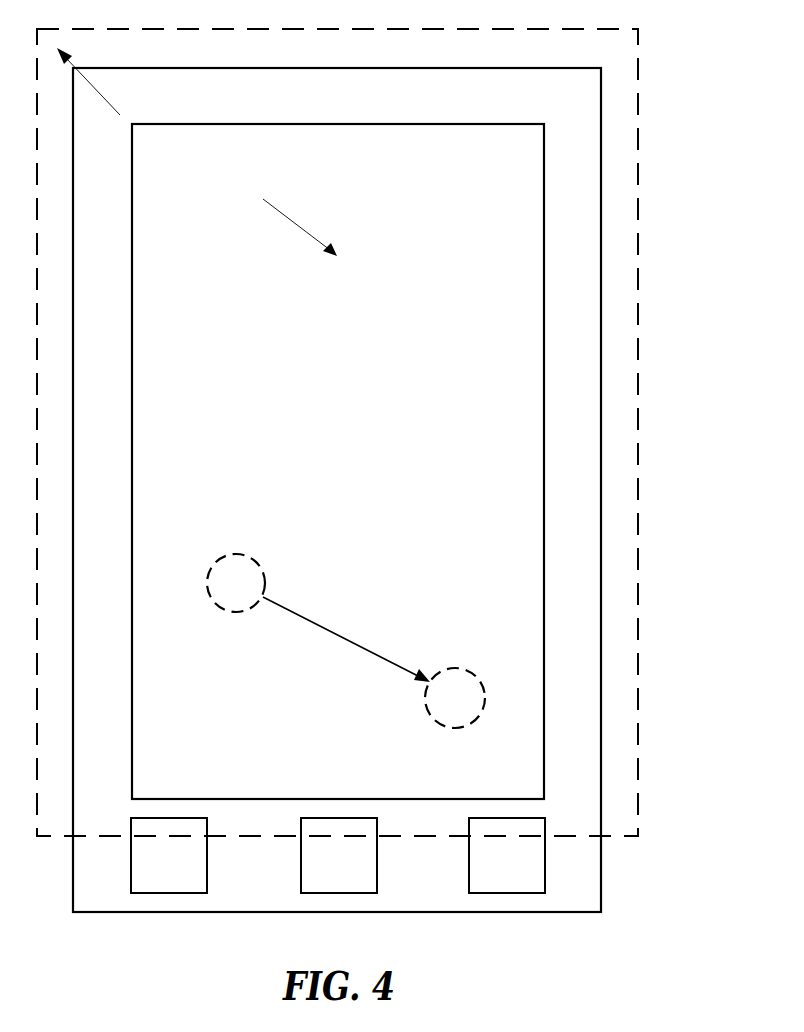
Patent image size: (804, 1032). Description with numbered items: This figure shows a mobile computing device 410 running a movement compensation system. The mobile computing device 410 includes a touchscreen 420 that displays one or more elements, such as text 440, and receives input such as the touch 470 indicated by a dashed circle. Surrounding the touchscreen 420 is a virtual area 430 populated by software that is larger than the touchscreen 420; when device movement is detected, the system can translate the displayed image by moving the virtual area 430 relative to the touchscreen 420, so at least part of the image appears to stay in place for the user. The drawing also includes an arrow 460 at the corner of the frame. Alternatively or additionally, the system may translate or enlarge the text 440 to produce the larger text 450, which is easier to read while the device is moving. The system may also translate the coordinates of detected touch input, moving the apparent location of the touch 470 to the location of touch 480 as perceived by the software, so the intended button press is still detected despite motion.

The mobile computing device 410 is at (601, 88).
The touchscreen 420 is at (544, 166).
The virtual area 430 is at (638, 50).
The text 440 is at (349, 185).
The larger text 450 is at (507, 276).
The corner drag arrow 460 is at (97, 93).
The touch 470 is at (218, 600).
The touch 480 is at (432, 716).